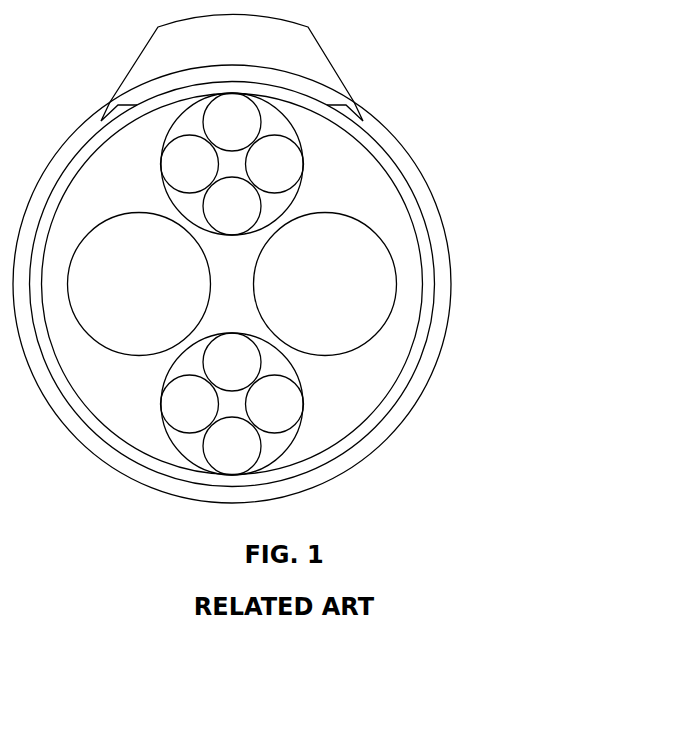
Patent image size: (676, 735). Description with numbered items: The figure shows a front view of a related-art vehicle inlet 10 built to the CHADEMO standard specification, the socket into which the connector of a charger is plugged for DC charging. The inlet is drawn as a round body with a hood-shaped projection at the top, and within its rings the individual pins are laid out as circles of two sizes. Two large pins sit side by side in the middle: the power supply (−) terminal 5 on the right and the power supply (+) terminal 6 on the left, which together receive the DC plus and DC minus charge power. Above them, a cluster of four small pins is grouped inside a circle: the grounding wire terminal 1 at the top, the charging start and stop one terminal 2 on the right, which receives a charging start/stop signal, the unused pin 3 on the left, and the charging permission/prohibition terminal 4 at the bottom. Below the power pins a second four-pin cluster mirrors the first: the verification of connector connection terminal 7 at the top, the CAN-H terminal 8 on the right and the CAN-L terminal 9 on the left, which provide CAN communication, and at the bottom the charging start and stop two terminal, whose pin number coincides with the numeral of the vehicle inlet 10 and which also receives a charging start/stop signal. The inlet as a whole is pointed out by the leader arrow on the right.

The grounding wire terminal 1 is at (232, 122).
The charging start/stop terminal 2 is at (275, 164).
The unused pin 3 is at (190, 164).
The charging permission/prohibition terminal 4 is at (232, 206).
The power supply (−) terminal 5 is at (325, 284).
The power supply (+) terminal 6 is at (139, 284).
The verification of connector connection terminal 7 is at (232, 362).
The CAN-H terminal 8 is at (275, 404).
The CAN-L terminal 9 is at (190, 404).
The vehicle inlet 10 is at (548, 138).